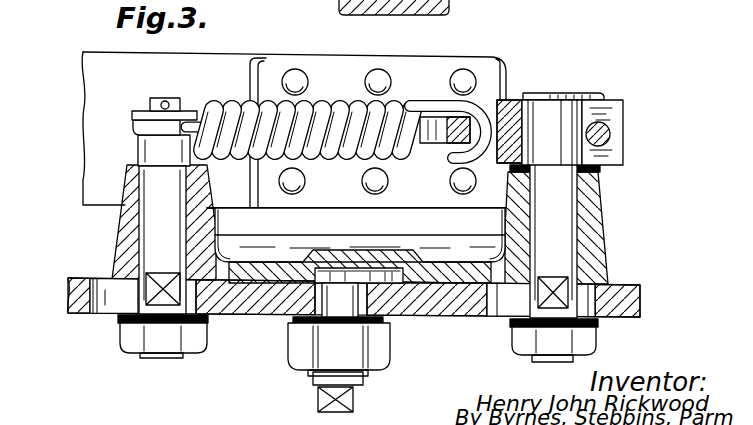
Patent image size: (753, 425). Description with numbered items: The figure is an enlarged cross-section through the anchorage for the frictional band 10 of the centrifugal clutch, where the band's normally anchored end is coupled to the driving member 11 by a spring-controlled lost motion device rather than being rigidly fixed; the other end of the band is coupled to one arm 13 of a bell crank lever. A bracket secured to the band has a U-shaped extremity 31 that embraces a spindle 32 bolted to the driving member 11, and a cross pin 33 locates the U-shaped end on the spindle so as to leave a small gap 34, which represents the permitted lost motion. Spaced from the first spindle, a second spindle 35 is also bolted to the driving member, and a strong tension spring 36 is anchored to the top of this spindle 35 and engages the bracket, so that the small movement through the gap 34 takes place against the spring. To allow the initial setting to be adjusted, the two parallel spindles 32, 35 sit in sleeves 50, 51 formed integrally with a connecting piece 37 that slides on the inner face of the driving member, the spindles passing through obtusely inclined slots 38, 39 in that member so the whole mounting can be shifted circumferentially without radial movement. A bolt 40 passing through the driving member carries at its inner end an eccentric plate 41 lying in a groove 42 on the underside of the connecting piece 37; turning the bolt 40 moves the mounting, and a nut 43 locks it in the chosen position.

The frictional band 10 is at (110, 122).
The driving member 11 is at (622, 318).
The arm of bell crank lever 13 is at (600, 257).
The U-shaped extremity 31 is at (514, 120).
The spindle 32 is at (560, 198).
The cross pin 33 is at (602, 128).
The gap 34 is at (524, 132).
The second spindle 35 is at (162, 240).
The tension spring 36 is at (330, 100).
The connecting piece 37 is at (426, 258).
The slot 38 is at (500, 300).
The slot 39 is at (118, 300).
The bolt 40 is at (365, 380).
The eccentric plate 41 is at (338, 270).
The groove 42 is at (373, 265).
The nut 43 is at (380, 348).
The sleeve 50 is at (596, 227).
The sleeve 51 is at (128, 183).